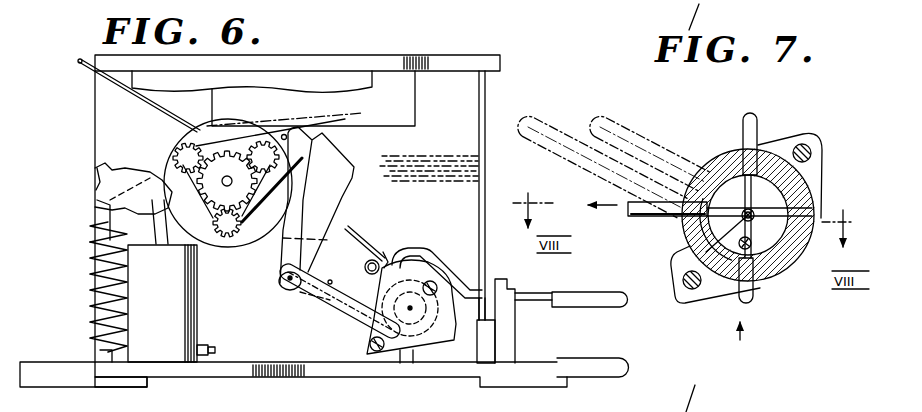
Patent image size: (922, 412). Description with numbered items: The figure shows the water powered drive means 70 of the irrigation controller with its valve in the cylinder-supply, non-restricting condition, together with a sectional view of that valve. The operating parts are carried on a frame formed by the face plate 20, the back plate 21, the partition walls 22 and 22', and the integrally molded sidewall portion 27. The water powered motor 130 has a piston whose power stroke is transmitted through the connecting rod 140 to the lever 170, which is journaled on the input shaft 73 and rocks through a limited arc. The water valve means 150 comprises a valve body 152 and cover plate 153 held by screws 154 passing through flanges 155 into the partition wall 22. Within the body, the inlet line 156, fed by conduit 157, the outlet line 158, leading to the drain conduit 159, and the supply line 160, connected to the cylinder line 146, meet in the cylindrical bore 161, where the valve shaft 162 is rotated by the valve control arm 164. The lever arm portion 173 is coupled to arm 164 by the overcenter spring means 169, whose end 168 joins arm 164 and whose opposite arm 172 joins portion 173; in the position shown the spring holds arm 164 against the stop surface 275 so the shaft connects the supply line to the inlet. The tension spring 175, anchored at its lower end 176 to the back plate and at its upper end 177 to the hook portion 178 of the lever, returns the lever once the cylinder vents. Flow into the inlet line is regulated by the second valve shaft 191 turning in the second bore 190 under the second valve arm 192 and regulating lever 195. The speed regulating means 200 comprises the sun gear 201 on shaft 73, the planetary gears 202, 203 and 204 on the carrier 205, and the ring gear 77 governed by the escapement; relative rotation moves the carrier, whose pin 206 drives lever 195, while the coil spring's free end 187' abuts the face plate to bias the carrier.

In FIG. 6, the face plate 20 is at (470, 52).
In FIG. 6, the back plate 21 is at (307, 378).
In FIG. 6, the partition wall 22 is at (502, 217).
In FIG. 6, the partition wall 22' is at (290, 85).
In FIG. 6, the frame sidewall portion 27 is at (503, 337).
In FIG. 6, the water powered drive means 70 is at (528, 68).
In FIG. 6, the input shaft 73 is at (222, 184).
In FIG. 6, the internal ring gear 77 is at (168, 158).
In FIG. 6, the water powered motor 130 is at (165, 348).
In FIG. 6, the connecting rod 140 is at (92, 240).
In FIG. 6, the cylinder connected line 146 is at (207, 347).
In FIG. 7, the cylinder connected line 146 is at (648, 216).
In FIG. 6, the water valve means 150 is at (527, 234).
In FIG. 7, the water valve means 150 is at (719, 112).
In FIG. 7, the valve body 152 is at (762, 280).
In FIG. 6, the cover plate 153 is at (434, 336).
In FIG. 6, the screws 154 is at (366, 356).
In FIG. 7, the screws 154 is at (812, 153).
In FIG. 7, the flanges 155 is at (793, 143).
In FIG. 7, the inlet line 156 is at (812, 212).
In FIG. 6, the conduit 157 is at (417, 362).
In FIG. 7, the conduit 157 is at (750, 303).
In FIG. 7, the outlet line 158 is at (722, 160).
In FIG. 6, the drain conduit 159 is at (480, 284).
In FIG. 7, the drain conduit 159 is at (752, 112).
In FIG. 7, the supply line 160 is at (676, 197).
In FIG. 7, the cylindrical bore 161 is at (738, 244).
In FIG. 7, the valve shaft 162 is at (754, 211).
In FIG. 6, the valve control arm 164 is at (366, 321).
In FIG. 7, the valve control arm 164 is at (630, 128).
In FIG. 6, the spring end 168 is at (280, 280).
In FIG. 6, the spring means 169 is at (383, 255).
In FIG. 6, the lever 170 is at (352, 203).
In FIG. 6, the spring arm 172 is at (371, 232).
In FIG. 6, the lever arm portion 173 is at (316, 246).
In FIG. 6, the tension spring 175 is at (92, 305).
In FIG. 6, the lower spring end 176 is at (102, 388).
In FIG. 6, the upper spring end 177 is at (97, 190).
In FIG. 6, the hook portion 178 is at (100, 172).
In FIG. 6, the spring free end 187' is at (115, 95).
In FIG. 7, the second bore 190 is at (790, 258).
In FIG. 7, the second valve shaft 191 is at (700, 258).
In FIG. 6, the second valve arm 192 is at (302, 290).
In FIG. 7, the second valve arm 192 is at (586, 170).
In FIG. 6, the regulating lever 195 is at (378, 157).
In FIG. 6, the speed regulating means 200 is at (170, 132).
In FIG. 6, the sun gear 201 is at (233, 150).
In FIG. 6, the planetary gear 202 is at (192, 142).
In FIG. 6, the planetary gear 203 is at (266, 140).
In FIG. 6, the planetary gear 204 is at (210, 250).
In FIG. 6, the carrier 205 is at (320, 115).
In FIG. 6, the pin 206 is at (290, 137).
In FIG. 6, the stop surface 275 is at (462, 256).